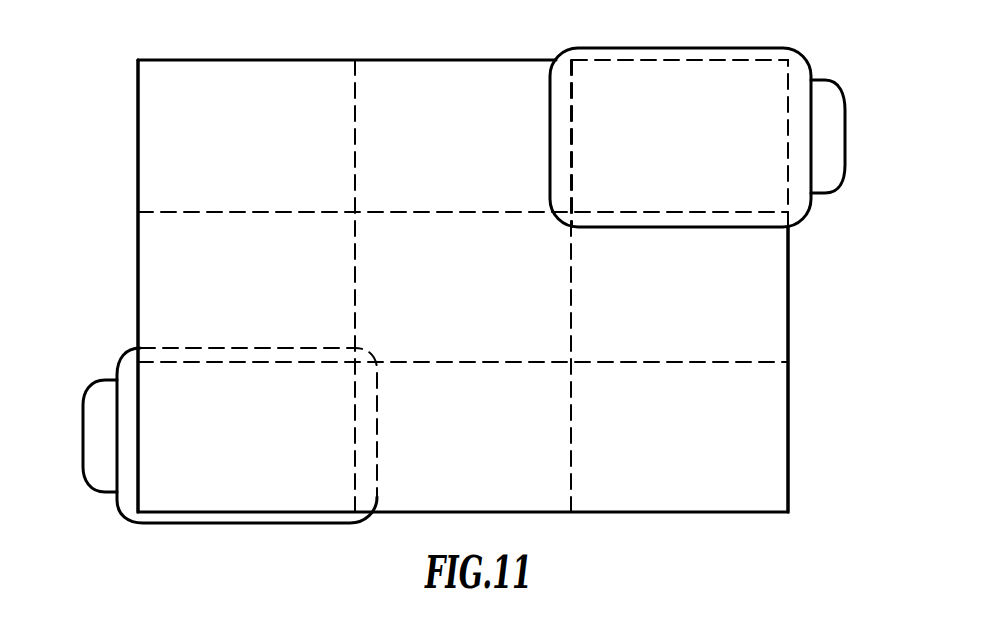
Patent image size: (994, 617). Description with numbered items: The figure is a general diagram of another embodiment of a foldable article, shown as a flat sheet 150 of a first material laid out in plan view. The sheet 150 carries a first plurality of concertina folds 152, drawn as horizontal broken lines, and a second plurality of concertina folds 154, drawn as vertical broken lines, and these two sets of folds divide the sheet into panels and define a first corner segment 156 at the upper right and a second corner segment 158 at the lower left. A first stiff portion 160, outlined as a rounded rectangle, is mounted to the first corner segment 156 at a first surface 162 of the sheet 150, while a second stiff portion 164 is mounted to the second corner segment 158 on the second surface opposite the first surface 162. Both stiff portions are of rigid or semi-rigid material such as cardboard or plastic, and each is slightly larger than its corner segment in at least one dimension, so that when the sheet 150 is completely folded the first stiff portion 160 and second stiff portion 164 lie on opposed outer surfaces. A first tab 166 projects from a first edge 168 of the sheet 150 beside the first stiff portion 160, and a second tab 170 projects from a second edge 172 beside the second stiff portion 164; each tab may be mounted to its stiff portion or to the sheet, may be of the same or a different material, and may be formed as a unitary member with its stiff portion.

The sheet 150 is at (204, 58).
The first plurality of concertina folds 152 is at (162, 210).
The second plurality of concertina folds 154 is at (357, 80).
The first corner segment 156 is at (725, 68).
The second corner segment 158 is at (283, 497).
The first stiff portion 160 is at (681, 47).
The first surface 162 is at (612, 73).
The second stiff portion 164 is at (218, 527).
The first tab 166 is at (847, 116).
The first edge 168 is at (790, 268).
The second tab 170 is at (85, 418).
The second edge 172 is at (138, 303).